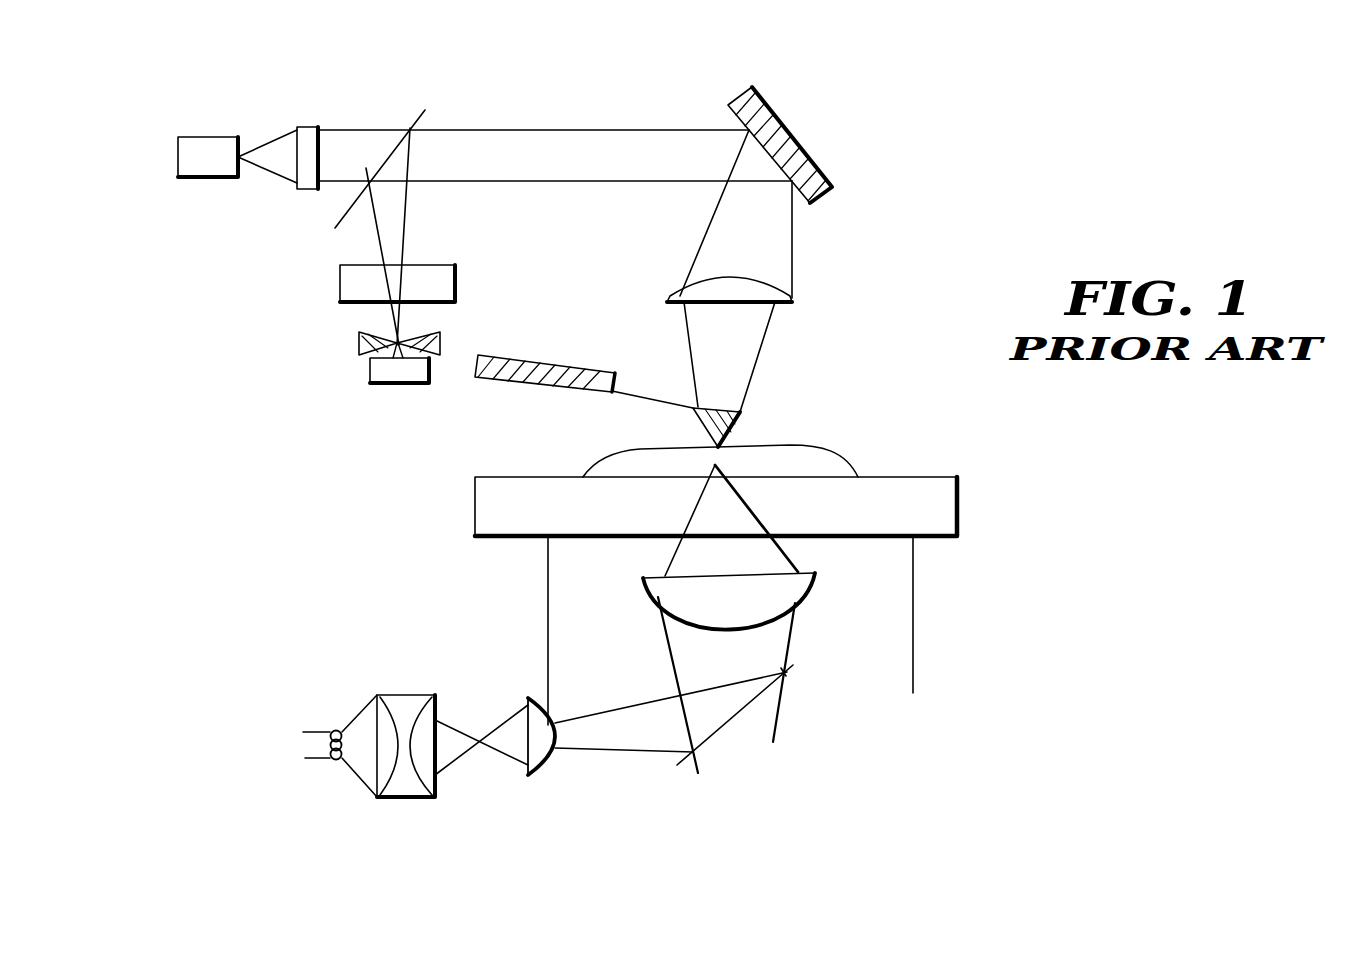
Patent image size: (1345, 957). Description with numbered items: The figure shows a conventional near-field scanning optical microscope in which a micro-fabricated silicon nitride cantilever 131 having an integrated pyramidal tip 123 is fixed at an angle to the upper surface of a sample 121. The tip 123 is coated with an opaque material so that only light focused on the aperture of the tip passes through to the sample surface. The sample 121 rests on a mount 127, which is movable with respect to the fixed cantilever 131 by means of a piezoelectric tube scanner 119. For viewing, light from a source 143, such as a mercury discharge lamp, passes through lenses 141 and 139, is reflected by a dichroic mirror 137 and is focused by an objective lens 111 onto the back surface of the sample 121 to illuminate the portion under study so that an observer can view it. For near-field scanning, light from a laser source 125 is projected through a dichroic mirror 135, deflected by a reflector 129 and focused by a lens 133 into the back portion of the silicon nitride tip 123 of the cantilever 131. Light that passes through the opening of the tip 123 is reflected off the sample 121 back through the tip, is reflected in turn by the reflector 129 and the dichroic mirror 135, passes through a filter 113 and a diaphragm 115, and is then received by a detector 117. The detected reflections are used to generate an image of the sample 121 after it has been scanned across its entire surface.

The objective lens 111 is at (663, 596).
The filter 113 is at (353, 280).
The diaphragm 115 is at (360, 343).
The detector 117 is at (382, 378).
The piezoelectric tube scanner 119 is at (902, 625).
The sample 121 is at (848, 462).
The pyramidal tip 123 is at (735, 430).
The laser source 125 is at (212, 135).
The mount 127 is at (513, 528).
The reflector 129 is at (770, 108).
The cantilever 131 is at (660, 404).
The lens 133 is at (773, 304).
The dichroic mirror 135 is at (409, 127).
The dichroic mirror 137 is at (780, 685).
The lens 139 is at (545, 770).
The lens 141 is at (402, 800).
The source 143 is at (305, 758).